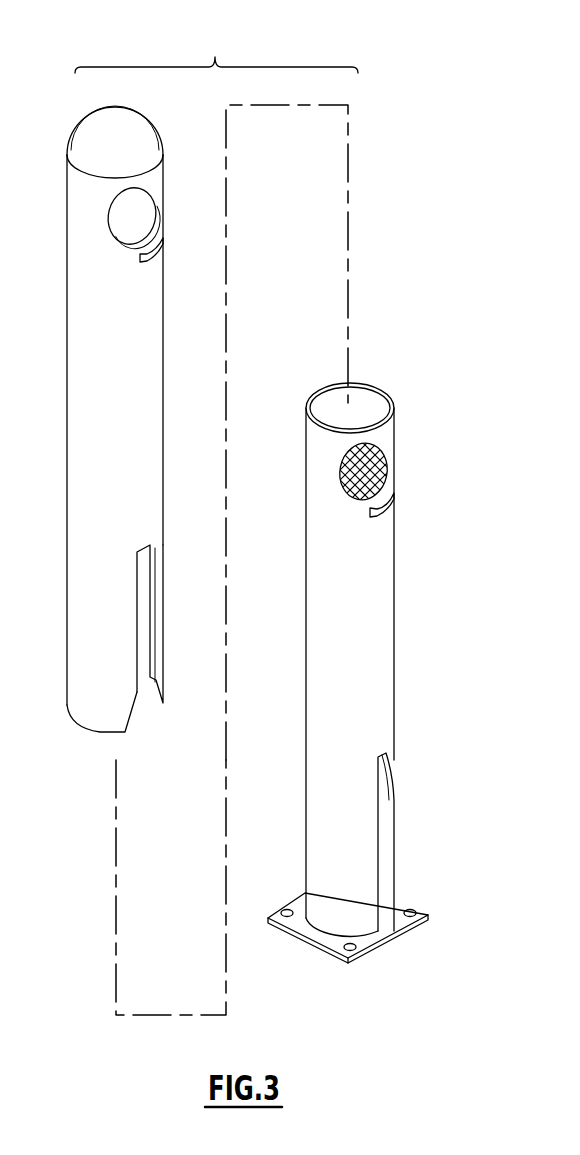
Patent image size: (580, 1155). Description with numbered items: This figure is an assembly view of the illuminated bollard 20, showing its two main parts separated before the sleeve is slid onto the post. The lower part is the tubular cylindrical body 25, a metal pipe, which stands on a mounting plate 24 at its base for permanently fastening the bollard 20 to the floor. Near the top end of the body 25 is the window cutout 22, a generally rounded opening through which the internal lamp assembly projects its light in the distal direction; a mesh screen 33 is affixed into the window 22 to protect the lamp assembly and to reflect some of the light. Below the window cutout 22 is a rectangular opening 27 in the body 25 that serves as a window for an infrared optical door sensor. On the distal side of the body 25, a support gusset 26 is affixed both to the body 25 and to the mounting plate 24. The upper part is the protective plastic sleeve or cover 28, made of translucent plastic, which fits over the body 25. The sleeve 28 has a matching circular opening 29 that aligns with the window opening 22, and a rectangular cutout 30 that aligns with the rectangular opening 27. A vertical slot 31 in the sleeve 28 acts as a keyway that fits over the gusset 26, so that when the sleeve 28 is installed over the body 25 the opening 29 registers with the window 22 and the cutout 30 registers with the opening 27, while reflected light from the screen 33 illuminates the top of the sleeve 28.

The bollard 20 is at (216, 50).
The window cutout 22 is at (377, 477).
The mounting plate 24 is at (422, 905).
The tubular cylindrical body 25 is at (394, 730).
The support gusset 26 is at (388, 857).
The rectangular opening 27 is at (380, 518).
The protective plastic sleeve 28 is at (88, 448).
The matching opening 29 is at (110, 234).
The rectangular cutout 30 is at (162, 256).
The vertical slot 31 is at (140, 630).
The mesh screen 33 is at (372, 467).